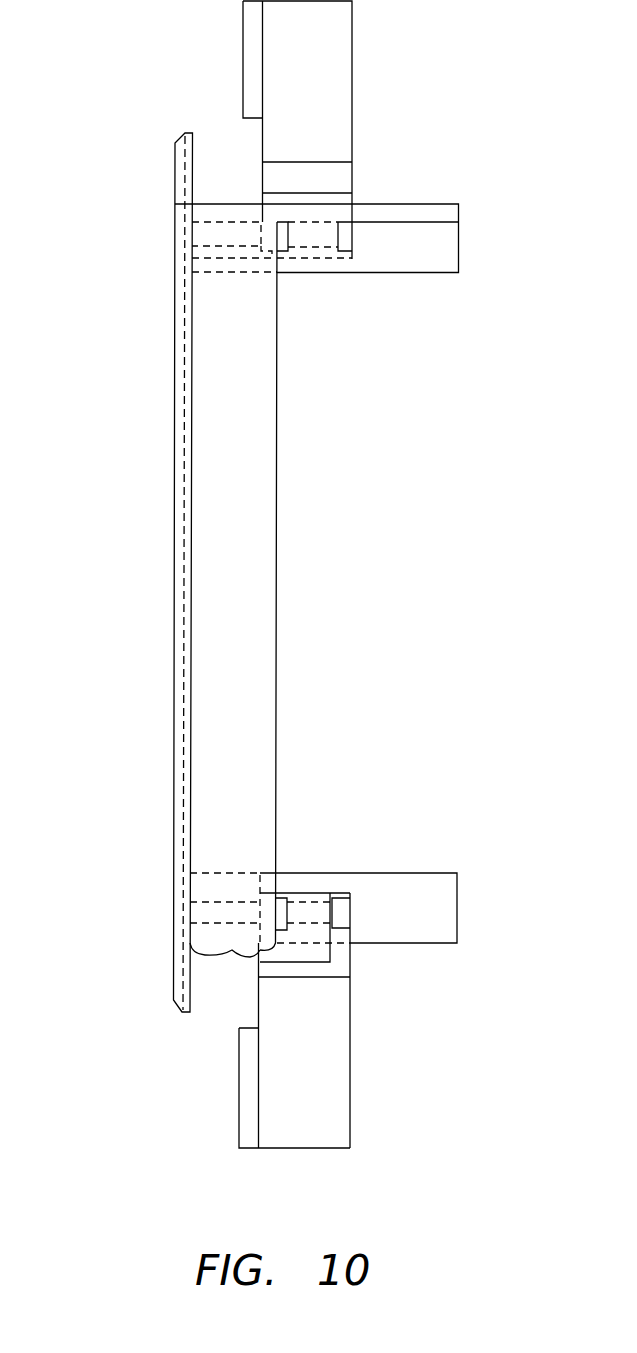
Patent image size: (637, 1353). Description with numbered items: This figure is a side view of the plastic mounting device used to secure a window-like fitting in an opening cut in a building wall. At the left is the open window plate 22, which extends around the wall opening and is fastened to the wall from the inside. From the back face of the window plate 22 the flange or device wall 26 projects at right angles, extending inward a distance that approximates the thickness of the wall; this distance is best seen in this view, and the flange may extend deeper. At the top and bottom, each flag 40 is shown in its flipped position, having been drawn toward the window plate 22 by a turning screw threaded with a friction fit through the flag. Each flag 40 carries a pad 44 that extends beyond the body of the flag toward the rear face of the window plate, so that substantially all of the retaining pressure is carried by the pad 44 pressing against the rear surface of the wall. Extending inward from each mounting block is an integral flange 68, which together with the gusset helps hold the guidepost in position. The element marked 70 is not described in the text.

The open window plate 22 is at (170, 173).
The flange or device wall 26 is at (251, 561).
The flag 40 is at (332, 78).
The pad 44 is at (243, 55).
The integral flange 68 is at (427, 255).
The scalloped edge 70 is at (231, 953).